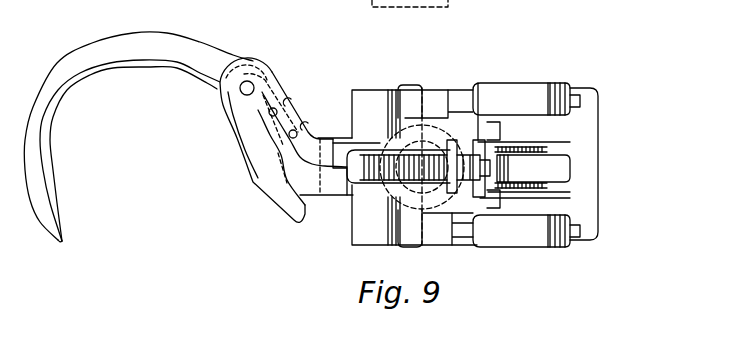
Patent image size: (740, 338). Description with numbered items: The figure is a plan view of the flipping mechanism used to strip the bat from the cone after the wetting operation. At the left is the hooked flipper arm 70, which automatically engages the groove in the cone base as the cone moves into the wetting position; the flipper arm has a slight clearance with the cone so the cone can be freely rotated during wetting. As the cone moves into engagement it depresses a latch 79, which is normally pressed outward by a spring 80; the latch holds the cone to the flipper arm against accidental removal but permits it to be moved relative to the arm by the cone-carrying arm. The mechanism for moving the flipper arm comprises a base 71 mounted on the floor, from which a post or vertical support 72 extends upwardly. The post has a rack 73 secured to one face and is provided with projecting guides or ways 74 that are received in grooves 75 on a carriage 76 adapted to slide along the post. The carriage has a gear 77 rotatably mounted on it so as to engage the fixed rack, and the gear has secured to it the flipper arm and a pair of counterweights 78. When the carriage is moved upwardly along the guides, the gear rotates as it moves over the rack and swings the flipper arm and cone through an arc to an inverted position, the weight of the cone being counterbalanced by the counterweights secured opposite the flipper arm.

The hooked flipper arm 70 is at (145, 42).
The base 71 is at (588, 208).
The post or vertical support 72 is at (566, 184).
The rack 73 is at (556, 154).
The projecting guides or ways 74 is at (482, 140).
The grooves 75 is at (477, 140).
The carriage 76 is at (463, 130).
The gear 77 is at (363, 180).
The counterweights 78 is at (533, 92).
The latch 79 is at (277, 190).
The spring 80 is at (299, 177).